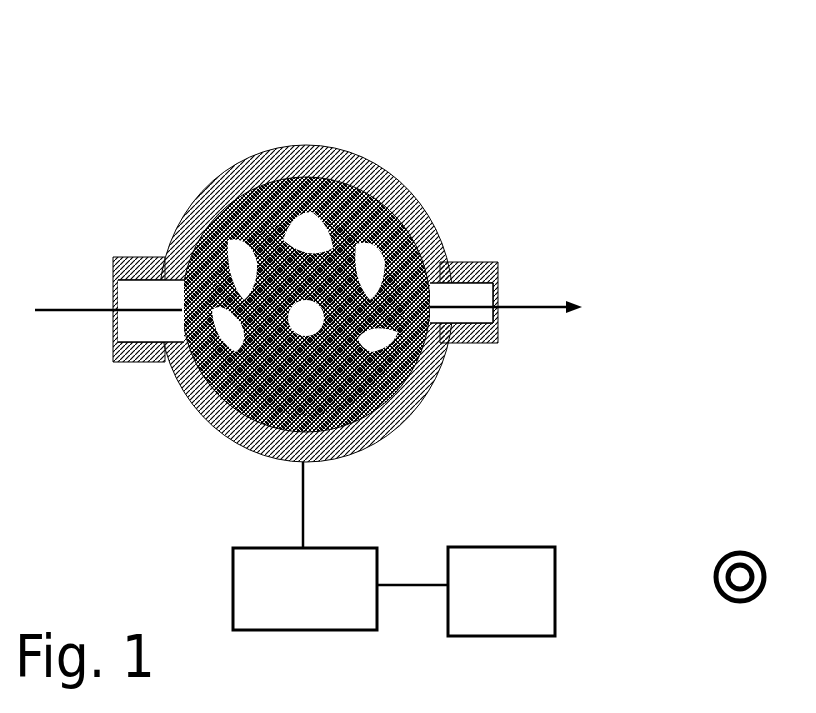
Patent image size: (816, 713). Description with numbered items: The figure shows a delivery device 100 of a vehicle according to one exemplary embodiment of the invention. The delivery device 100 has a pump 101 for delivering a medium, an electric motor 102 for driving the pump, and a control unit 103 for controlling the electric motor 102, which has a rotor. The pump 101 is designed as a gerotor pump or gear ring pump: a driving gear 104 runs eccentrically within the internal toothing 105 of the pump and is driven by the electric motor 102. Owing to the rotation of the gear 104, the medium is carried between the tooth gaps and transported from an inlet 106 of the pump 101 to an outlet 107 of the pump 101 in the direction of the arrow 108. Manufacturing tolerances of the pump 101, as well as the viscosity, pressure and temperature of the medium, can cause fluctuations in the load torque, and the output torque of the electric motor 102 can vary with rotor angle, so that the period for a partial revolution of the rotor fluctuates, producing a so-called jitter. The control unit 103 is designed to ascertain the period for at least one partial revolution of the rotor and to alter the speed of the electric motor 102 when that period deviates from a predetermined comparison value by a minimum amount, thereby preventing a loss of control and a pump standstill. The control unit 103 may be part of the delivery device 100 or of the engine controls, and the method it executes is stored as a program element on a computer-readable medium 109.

The delivery device 100 is at (652, 50).
The pump 101 is at (315, 260).
The electric motor 102 is at (340, 546).
The control unit 103 is at (501, 591).
The driving gear 104 is at (366, 304).
The internal toothing 105 is at (306, 231).
The inlet 106 is at (107, 282).
The outlet 107 is at (498, 266).
The arrow 108 is at (308, 363).
The computer-readable medium 109 is at (733, 603).